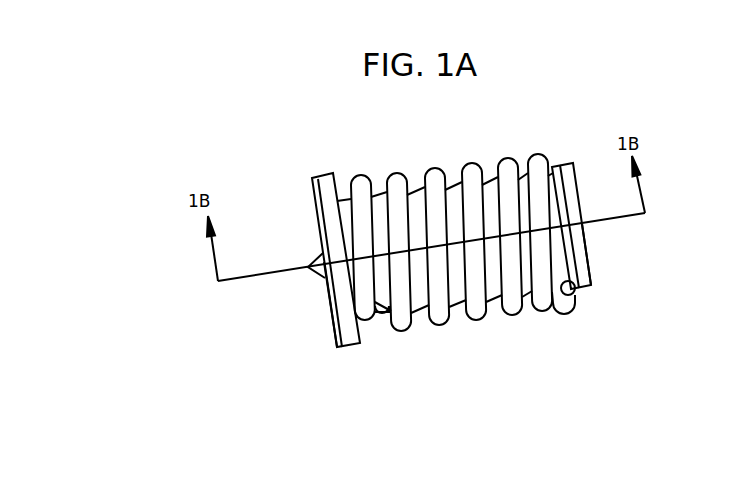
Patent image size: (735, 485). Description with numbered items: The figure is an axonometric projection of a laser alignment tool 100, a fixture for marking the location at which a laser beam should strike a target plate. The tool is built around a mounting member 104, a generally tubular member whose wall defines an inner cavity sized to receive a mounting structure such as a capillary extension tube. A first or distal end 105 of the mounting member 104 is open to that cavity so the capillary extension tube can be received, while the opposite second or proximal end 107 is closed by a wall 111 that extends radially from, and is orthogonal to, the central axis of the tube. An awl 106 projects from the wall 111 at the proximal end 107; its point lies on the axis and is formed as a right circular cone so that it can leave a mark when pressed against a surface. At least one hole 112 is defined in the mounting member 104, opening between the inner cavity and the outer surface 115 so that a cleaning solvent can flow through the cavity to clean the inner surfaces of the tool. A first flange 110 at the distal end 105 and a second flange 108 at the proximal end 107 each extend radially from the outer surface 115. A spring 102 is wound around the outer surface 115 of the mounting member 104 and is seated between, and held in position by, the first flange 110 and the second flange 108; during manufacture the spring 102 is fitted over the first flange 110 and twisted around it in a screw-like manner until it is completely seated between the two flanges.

The laser alignment tool 100 is at (283, 378).
The spring 102 is at (550, 312).
The mounting member 104 is at (493, 300).
The distal end 105 is at (588, 255).
The awl 106 is at (322, 257).
The proximal end 107 is at (330, 320).
The second flange 108 is at (325, 183).
The first flange 110 is at (563, 170).
The wall 111 is at (312, 202).
The hole 112 is at (383, 312).
The outer surface 115 is at (488, 175).